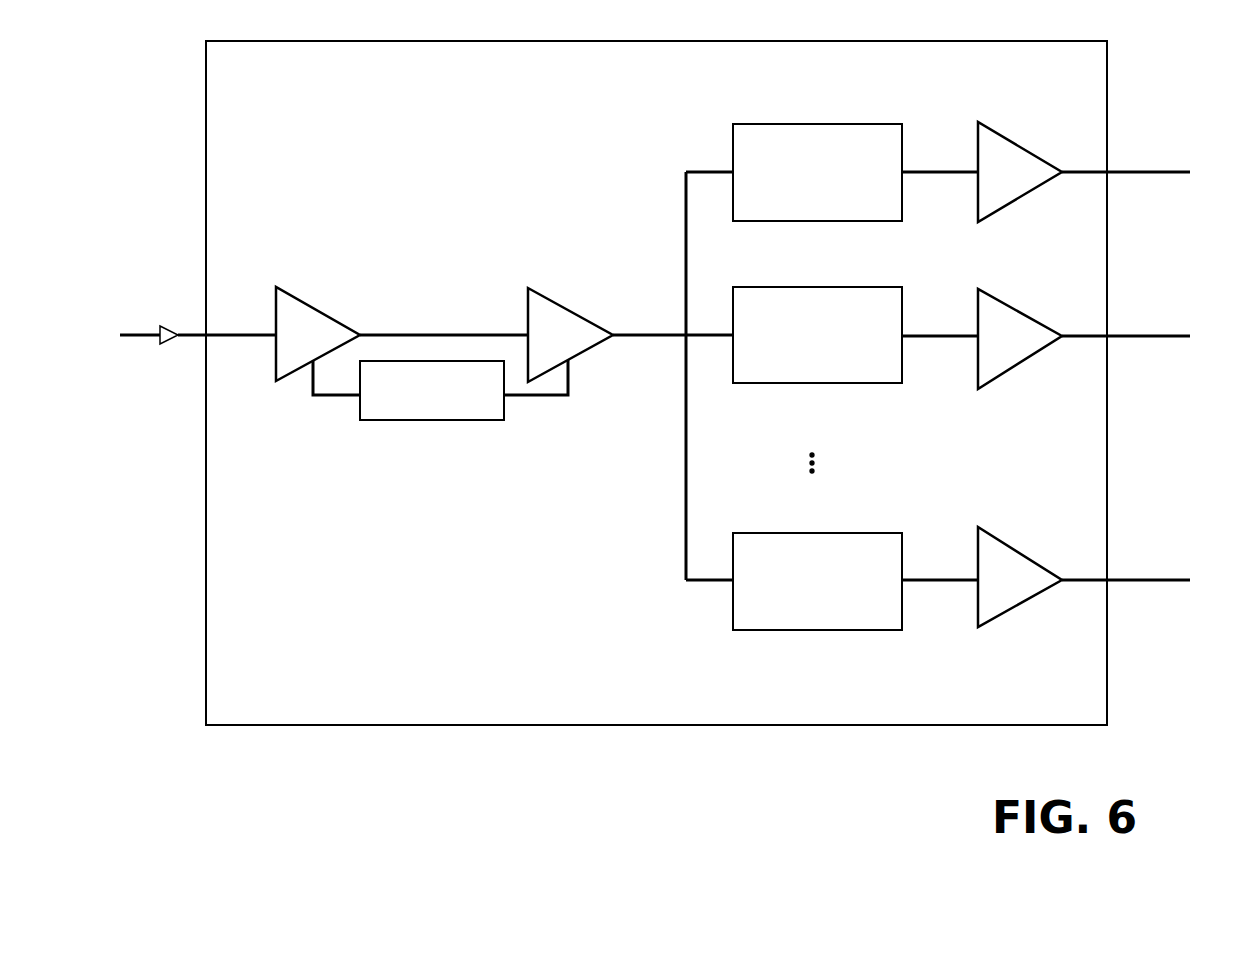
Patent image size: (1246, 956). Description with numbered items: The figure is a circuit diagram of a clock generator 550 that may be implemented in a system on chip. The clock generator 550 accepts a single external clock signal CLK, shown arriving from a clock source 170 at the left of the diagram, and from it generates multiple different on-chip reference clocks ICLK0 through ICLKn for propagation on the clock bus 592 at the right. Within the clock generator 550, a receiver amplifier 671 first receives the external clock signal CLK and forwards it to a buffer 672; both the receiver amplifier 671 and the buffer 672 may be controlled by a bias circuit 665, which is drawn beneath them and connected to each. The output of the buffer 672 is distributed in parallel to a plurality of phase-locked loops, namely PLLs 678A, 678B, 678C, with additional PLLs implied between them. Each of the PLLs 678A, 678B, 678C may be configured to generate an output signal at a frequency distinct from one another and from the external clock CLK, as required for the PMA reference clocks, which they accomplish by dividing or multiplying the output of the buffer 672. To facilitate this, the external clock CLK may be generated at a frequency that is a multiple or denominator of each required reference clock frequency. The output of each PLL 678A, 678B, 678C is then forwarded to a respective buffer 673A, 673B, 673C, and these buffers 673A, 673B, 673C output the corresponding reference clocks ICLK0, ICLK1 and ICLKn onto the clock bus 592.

The clock generator 550 is at (656, 383).
The clock source 170 is at (106, 333).
The receiver amplifier 671 is at (310, 306).
The bias circuit 665 is at (440, 390).
The buffer 672 is at (564, 308).
The PLL 678A is at (817, 172).
The PLL 678B is at (817, 335).
The PLL 678C is at (817, 581).
The buffer 673A is at (1008, 140).
The buffer 673B is at (1008, 307).
The buffer 673C is at (1008, 545).
The clock bus 592 is at (1151, 361).